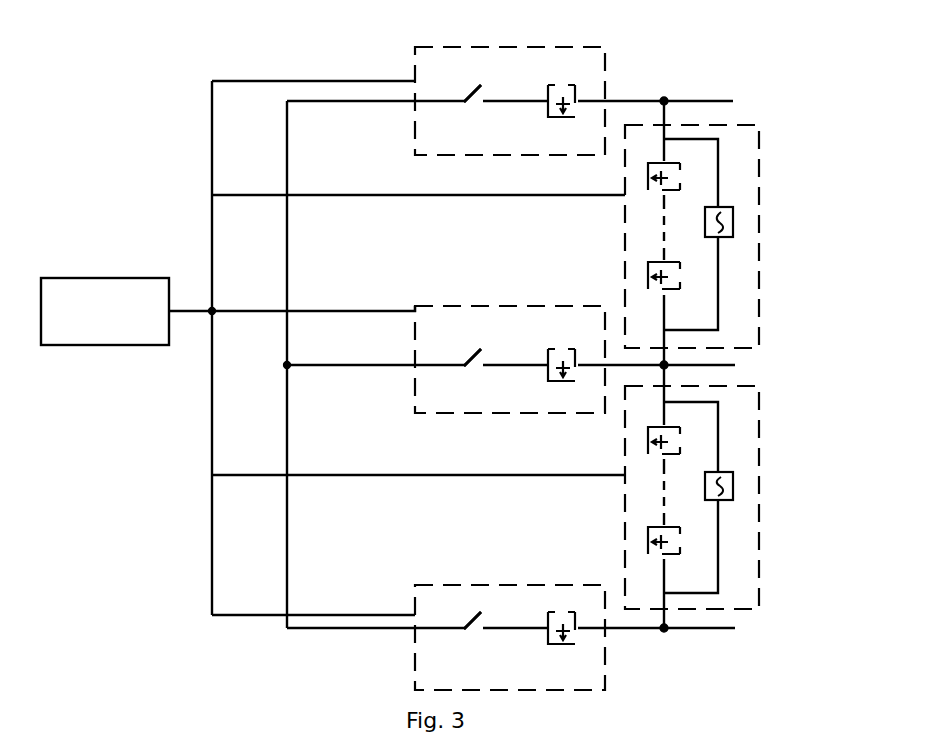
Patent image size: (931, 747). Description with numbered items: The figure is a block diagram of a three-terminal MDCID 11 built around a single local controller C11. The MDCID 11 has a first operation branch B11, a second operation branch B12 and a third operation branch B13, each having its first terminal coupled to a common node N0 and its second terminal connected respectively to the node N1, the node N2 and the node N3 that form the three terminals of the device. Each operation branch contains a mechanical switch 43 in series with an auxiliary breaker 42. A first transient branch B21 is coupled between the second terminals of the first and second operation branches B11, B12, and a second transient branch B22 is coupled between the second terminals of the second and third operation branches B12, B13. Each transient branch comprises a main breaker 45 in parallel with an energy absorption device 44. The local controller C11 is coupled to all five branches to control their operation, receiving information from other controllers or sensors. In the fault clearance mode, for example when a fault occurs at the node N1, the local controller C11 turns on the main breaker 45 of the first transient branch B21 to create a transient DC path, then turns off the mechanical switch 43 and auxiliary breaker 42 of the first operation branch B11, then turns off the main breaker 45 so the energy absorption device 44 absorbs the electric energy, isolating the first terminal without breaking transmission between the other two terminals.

The three-terminal MDCID 11 is at (246, 60).
The local controller C11 is at (110, 290).
The common node N0 is at (285, 362).
The node N1 is at (662, 98).
The node N2 is at (666, 364).
The node N3 is at (665, 630).
The first operation branch B11 is at (419, 152).
The second operation branch B12 is at (420, 318).
The third operation branch B13 is at (420, 598).
The first transient branch B21 is at (740, 192).
The second transient branch B22 is at (740, 455).
The auxiliary breaker 42 is at (550, 94).
The mechanical switch 43 is at (478, 88).
The energy absorption device 44 is at (723, 238).
The main breaker 45 is at (656, 186).